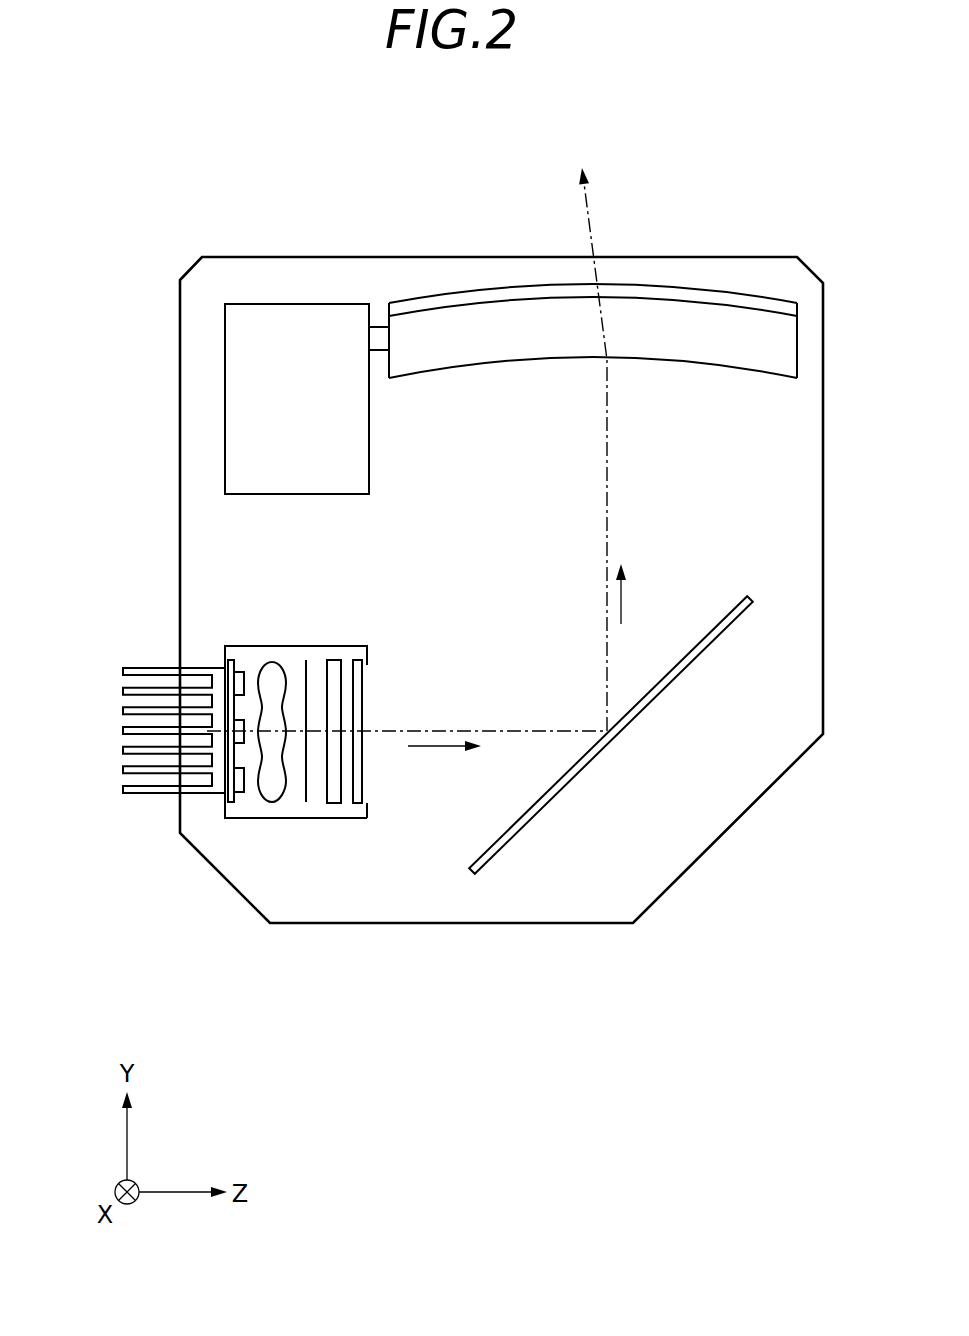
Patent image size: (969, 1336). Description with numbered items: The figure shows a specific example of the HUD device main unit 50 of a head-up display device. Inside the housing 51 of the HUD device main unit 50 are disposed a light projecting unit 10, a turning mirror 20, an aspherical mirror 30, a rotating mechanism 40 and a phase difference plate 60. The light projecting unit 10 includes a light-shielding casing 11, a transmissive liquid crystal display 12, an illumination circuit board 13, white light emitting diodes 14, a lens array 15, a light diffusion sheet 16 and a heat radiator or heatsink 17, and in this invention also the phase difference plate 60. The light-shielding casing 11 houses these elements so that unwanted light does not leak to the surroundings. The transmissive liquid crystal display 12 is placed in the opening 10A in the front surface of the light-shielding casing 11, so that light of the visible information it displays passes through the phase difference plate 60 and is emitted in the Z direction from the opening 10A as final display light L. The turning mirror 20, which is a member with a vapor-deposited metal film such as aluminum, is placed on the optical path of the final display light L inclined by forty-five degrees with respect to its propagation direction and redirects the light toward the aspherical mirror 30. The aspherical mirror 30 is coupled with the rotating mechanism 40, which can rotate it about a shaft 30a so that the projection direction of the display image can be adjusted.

The HUD device main unit 50 is at (323, 205).
The housing 51 is at (180, 282).
The rotating mechanism 40 is at (275, 318).
The aspherical mirror 30 is at (739, 367).
The shaft 30a is at (380, 327).
The turning mirror 20 is at (525, 825).
The light projecting unit 10 is at (282, 643).
The opening 10A is at (367, 788).
The light-shielding casing 11 is at (312, 645).
The transmissive liquid crystal display 12 is at (333, 795).
The illumination circuit board 13 is at (230, 802).
The white light emitting diodes 14 is at (247, 680).
The lens array 15 is at (268, 792).
The light diffusion sheet 16 is at (303, 792).
The heat radiator (heatsink) 17 is at (128, 770).
The phase difference plate 60 is at (358, 692).
The final display light L is at (431, 748).